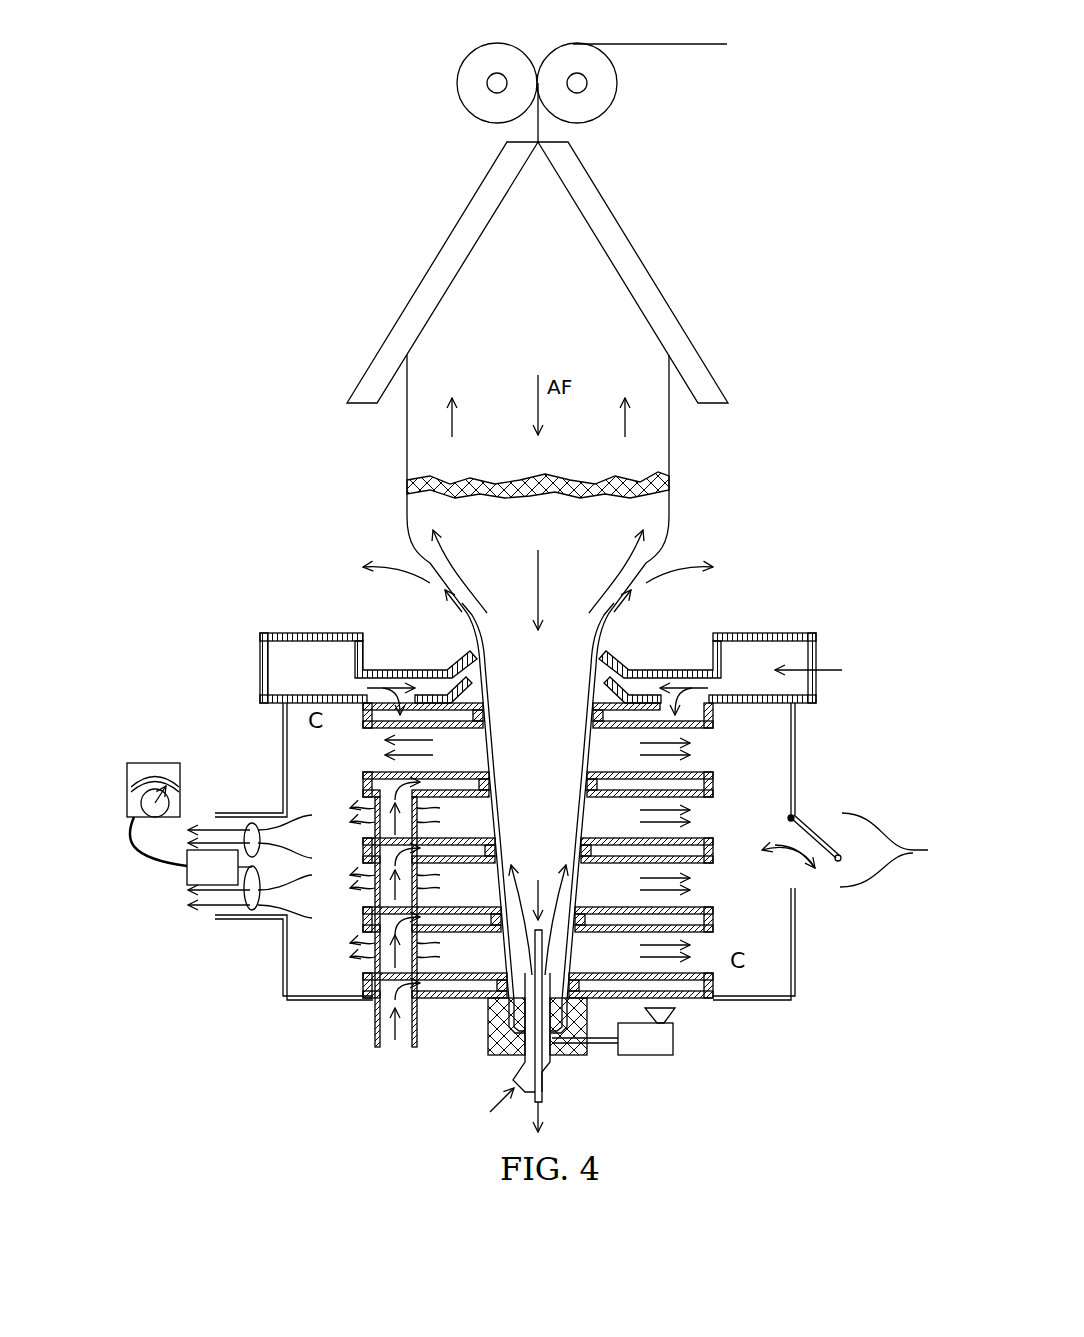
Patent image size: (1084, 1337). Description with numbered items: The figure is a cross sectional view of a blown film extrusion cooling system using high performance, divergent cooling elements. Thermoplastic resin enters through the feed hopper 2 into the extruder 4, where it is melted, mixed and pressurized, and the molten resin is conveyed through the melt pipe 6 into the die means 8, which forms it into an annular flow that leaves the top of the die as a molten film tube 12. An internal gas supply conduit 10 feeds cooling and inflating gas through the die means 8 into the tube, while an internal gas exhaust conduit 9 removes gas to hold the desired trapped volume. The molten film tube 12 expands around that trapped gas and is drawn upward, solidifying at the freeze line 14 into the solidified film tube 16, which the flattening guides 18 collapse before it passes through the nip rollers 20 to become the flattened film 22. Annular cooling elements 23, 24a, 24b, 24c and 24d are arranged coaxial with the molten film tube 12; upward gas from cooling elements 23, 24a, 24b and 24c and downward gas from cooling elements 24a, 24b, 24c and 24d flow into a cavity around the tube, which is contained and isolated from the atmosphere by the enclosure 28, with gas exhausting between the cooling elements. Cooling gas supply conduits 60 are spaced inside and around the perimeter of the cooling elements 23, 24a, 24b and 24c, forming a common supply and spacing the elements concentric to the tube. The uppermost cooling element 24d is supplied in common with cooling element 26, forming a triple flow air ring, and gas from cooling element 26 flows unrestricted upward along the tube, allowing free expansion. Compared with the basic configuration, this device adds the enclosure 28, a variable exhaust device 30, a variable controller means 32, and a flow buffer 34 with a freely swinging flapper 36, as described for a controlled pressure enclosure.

The feed hopper 2 is at (665, 1016).
The extruder 4 is at (656, 1045).
The melt pipe 6 is at (603, 1043).
The die means 8 is at (488, 1025).
The internal gas exhaust conduit 9 is at (545, 1092).
The internal gas supply conduit 10 is at (518, 1070).
The molten film tube 12 is at (669, 512).
The freeze line 14 is at (667, 481).
The solidified film tube 16 is at (669, 447).
The flattening guides 18 is at (427, 270).
The nip rollers 20 is at (462, 110).
The flattened film 22 is at (613, 42).
The cooling element 23 is at (700, 987).
The cooling element 24a is at (700, 920).
The cooling element 24b is at (700, 850).
The cooling element 24c is at (700, 783).
The cooling element 24d is at (712, 708).
The cooling element 26 is at (300, 655).
The enclosure 28 is at (283, 950).
The variable exhaust device 30 is at (187, 871).
The variable controller means 32 is at (127, 797).
The flow buffer 34 is at (861, 850).
The flapper 36 is at (805, 826).
The cooling gas supply conduits 60 is at (373, 965).